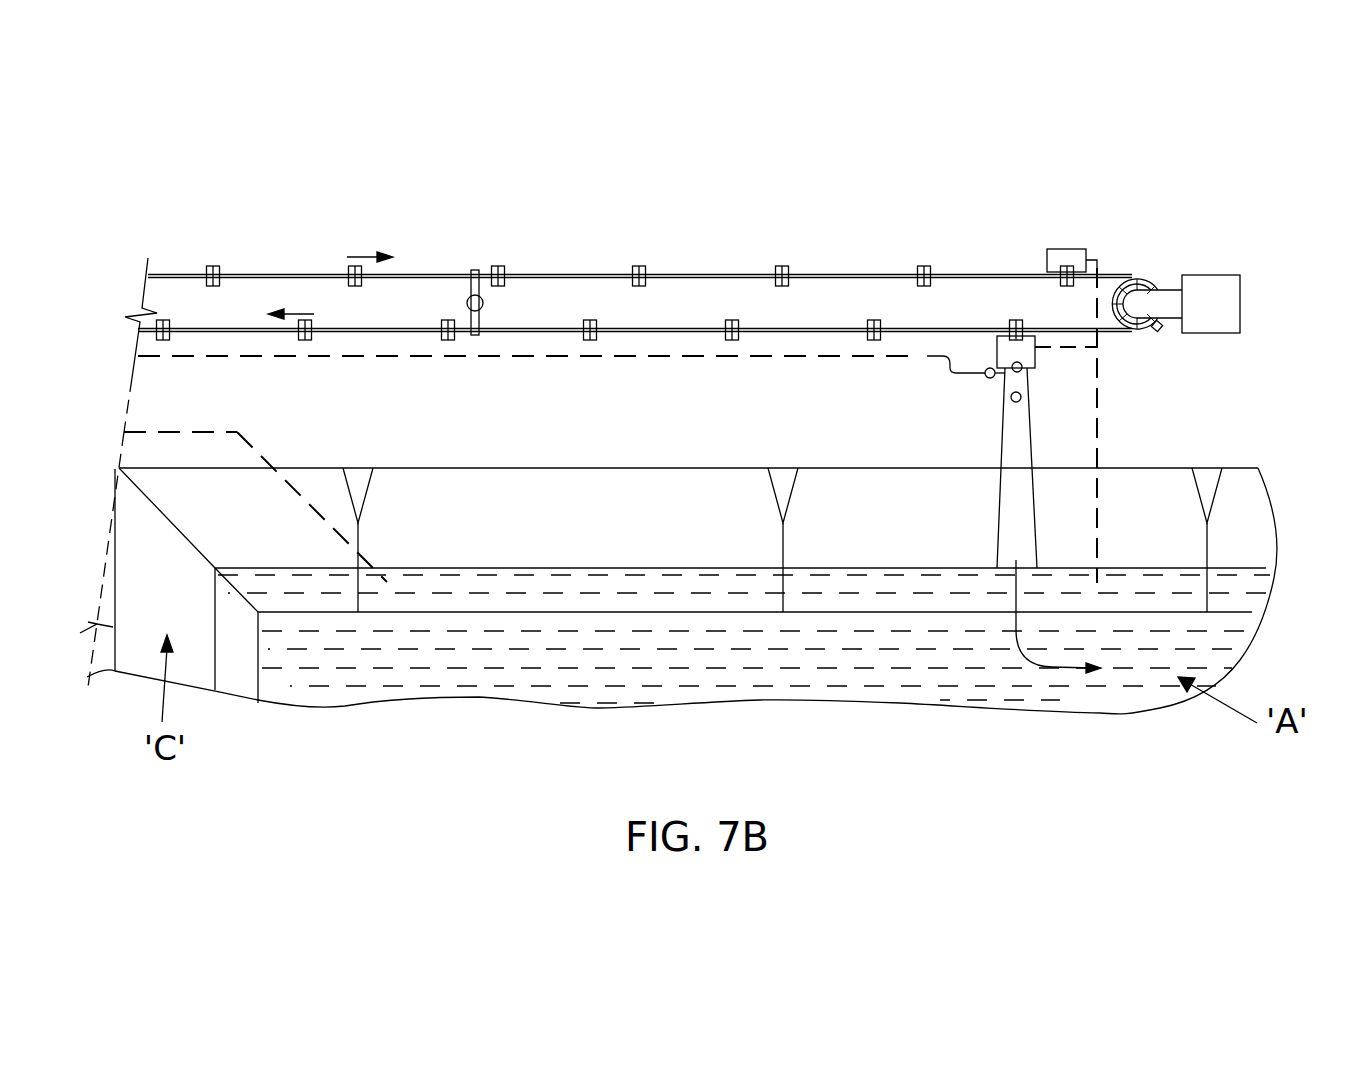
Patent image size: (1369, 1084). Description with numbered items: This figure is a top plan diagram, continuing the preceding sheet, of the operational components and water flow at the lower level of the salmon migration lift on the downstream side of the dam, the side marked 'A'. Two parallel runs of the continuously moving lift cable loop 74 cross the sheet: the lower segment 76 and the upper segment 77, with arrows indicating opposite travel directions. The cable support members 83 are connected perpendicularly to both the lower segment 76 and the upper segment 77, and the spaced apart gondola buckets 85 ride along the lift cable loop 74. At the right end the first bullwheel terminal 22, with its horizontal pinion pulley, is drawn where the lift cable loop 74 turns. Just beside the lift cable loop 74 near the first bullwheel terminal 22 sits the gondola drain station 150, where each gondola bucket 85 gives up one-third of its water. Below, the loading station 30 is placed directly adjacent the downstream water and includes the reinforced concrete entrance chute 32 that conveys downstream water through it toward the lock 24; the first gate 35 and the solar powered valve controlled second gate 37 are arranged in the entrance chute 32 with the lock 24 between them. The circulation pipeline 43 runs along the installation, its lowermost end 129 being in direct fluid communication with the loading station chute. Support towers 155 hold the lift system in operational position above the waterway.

The first bullwheel terminal 22 is at (1196, 276).
The lock 24 is at (1027, 383).
The loading station 30 is at (1037, 356).
The entrance chute 32 is at (1027, 498).
The first gate 35 is at (1021, 401).
The second gate 37 is at (1013, 362).
The circulation pipeline 43 is at (895, 358).
The lift cable loop 74 is at (693, 268).
The lower segment 76 is at (609, 328).
The upper segment 77 is at (732, 274).
The cable support member 83 is at (470, 286).
The gondola bucket 85 is at (1017, 325).
The lowermost end 129 is at (968, 374).
The gondola drain station 150 is at (1067, 249).
The support tower 155 is at (1208, 540).